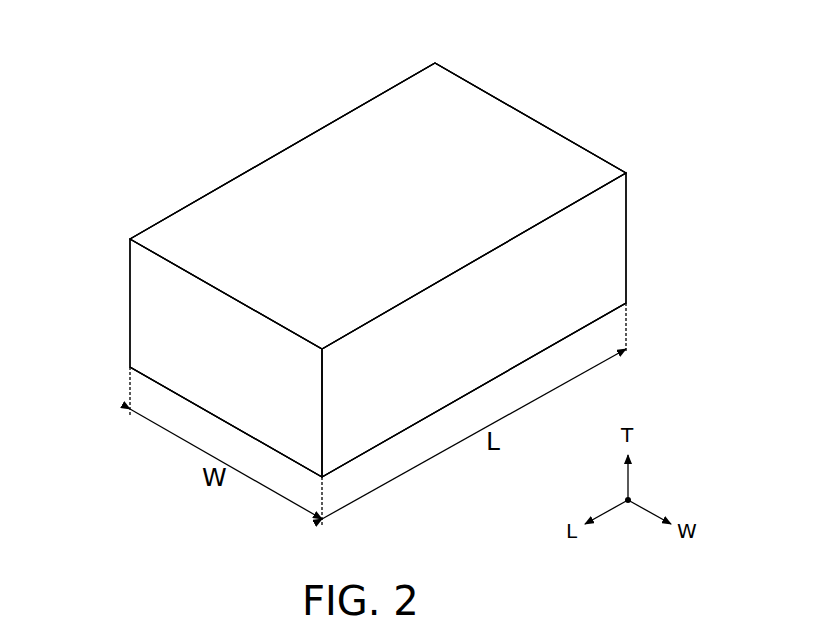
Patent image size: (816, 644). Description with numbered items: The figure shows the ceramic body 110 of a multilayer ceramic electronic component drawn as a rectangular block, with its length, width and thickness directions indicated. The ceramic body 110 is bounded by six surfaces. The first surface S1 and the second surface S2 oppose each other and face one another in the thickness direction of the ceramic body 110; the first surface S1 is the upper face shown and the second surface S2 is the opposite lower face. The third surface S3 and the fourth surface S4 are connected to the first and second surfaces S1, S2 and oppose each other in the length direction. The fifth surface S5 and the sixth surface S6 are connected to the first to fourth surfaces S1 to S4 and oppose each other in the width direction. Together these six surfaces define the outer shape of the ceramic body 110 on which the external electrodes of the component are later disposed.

The ceramic body 110 is at (457, 92).
The first surface S1 is at (253, 212).
The second surface S2 is at (203, 380).
The third surface S3 is at (163, 302).
The fourth surface S4 is at (512, 140).
The fifth surface S5 is at (603, 247).
The sixth surface S6 is at (377, 137).